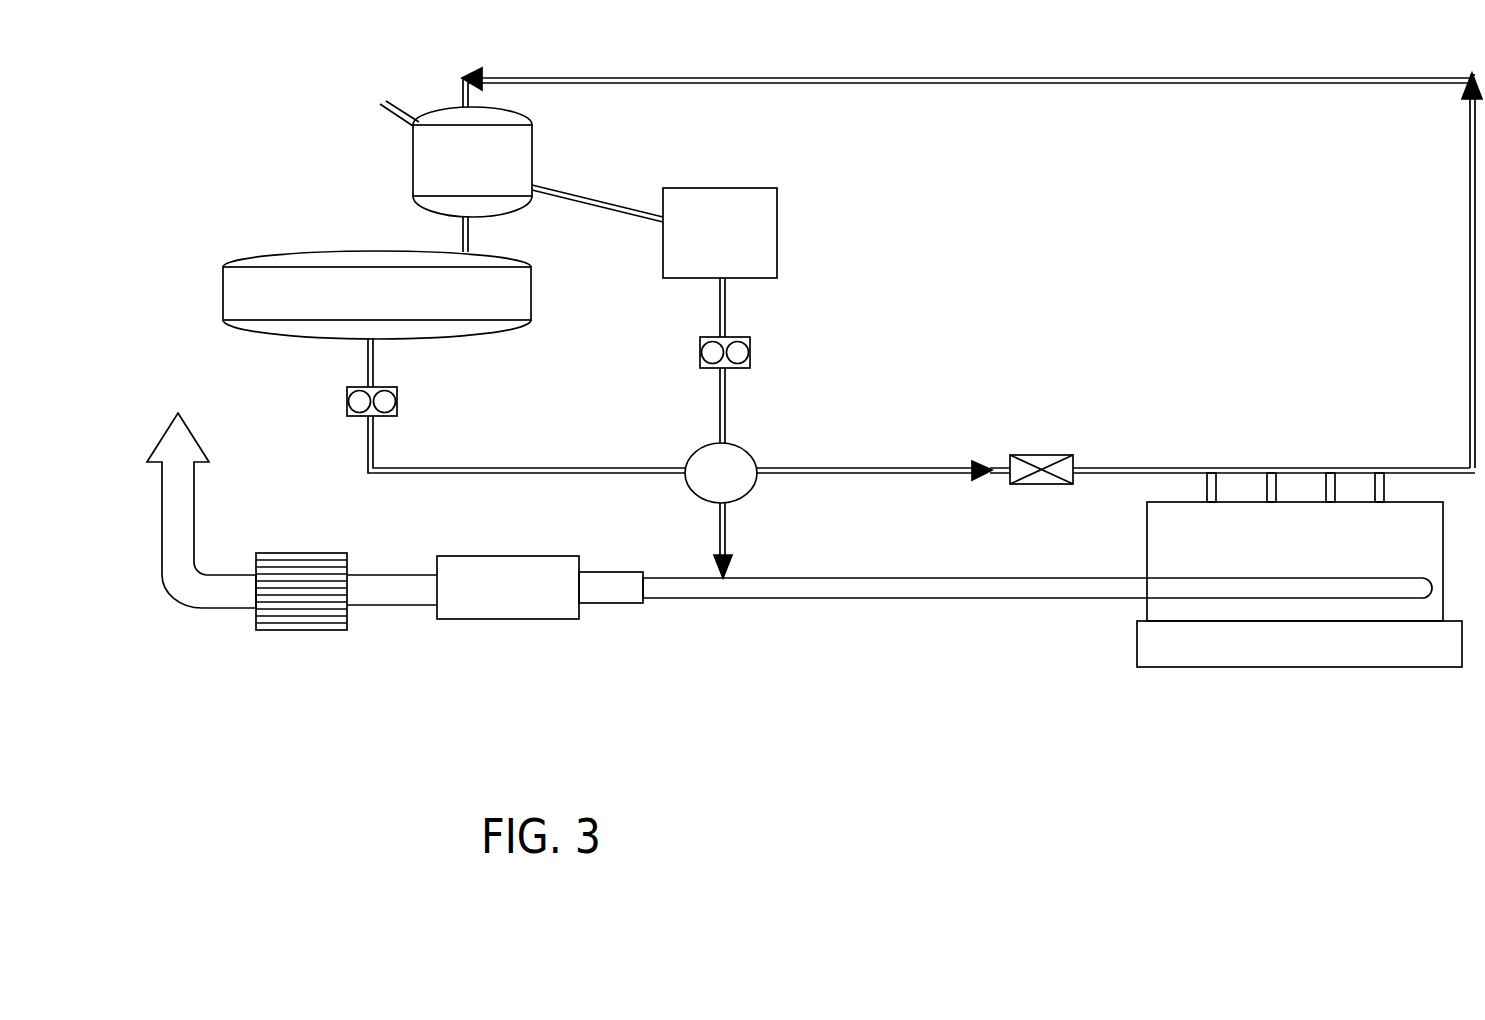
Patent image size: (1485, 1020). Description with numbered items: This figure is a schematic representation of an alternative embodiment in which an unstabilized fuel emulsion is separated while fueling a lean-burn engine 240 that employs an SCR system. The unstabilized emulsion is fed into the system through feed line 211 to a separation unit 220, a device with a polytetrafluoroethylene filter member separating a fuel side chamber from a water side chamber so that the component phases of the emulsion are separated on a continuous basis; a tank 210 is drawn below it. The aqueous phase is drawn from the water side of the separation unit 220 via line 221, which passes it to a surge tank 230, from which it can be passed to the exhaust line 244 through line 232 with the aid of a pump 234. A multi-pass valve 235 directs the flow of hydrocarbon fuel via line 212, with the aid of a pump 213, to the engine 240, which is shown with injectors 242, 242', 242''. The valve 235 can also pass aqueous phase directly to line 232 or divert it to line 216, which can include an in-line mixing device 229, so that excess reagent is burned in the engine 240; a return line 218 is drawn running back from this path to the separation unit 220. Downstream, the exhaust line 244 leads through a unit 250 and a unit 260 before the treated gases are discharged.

The fuel tank 210 is at (360, 309).
The feed line 211 is at (398, 105).
The line 212 is at (360, 452).
The pump 213 is at (398, 400).
The line 216 is at (902, 468).
The return line 218 is at (1047, 82).
The separation unit 220 is at (447, 171).
The line 221 is at (580, 200).
The in-line mixing device 229 is at (1025, 468).
The surge tank 230 is at (695, 239).
The line 232 is at (727, 548).
The pump 234 is at (752, 350).
The multi-pass valve 235 is at (743, 465).
The engine 240 is at (1281, 557).
The fuel injector 242 is at (1203, 428).
The fuel injector 242' is at (1218, 454).
The fuel injector 242'' is at (1280, 432).
The line 244 is at (1003, 600).
The muffler 250 is at (483, 600).
The catalytic converter 260 is at (322, 630).